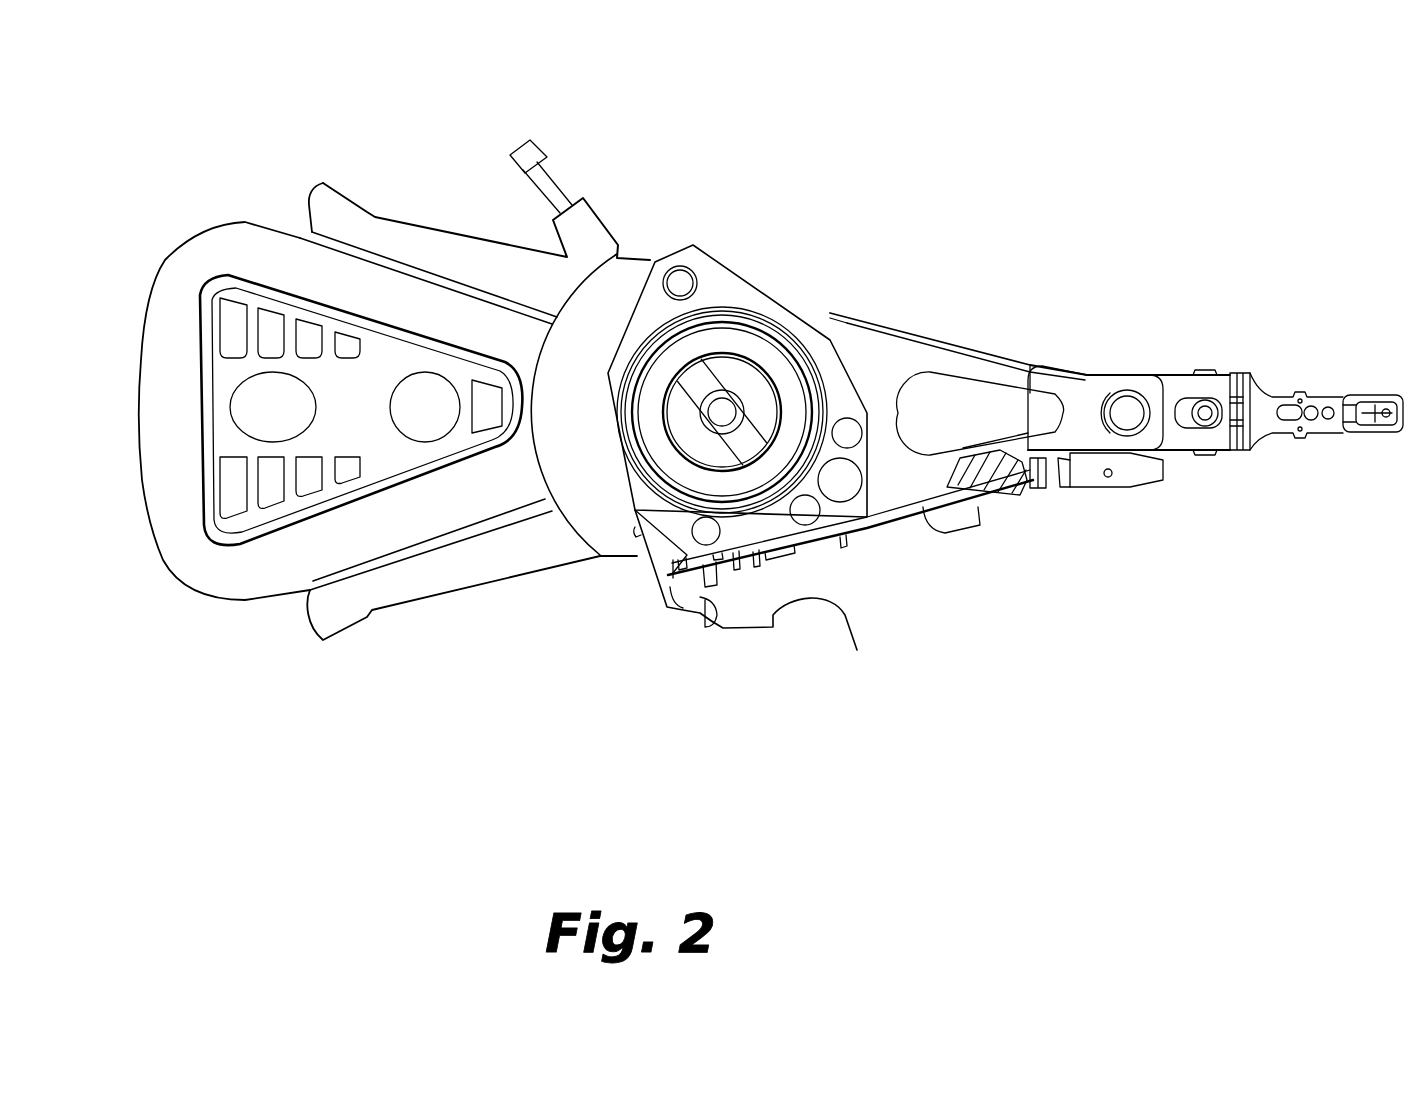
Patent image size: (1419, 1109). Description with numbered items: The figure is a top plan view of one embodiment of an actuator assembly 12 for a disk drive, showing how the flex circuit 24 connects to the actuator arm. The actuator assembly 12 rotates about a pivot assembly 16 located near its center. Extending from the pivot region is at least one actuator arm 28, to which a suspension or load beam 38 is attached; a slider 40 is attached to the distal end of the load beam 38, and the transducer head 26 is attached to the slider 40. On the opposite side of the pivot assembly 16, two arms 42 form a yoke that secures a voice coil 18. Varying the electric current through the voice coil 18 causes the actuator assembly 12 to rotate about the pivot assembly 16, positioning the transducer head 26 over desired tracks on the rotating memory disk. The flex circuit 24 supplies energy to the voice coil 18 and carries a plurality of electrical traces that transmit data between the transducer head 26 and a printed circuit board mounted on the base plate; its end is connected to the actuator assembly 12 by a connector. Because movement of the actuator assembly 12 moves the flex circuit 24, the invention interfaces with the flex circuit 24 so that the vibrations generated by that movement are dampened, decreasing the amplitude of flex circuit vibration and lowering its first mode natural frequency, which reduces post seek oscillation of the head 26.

The actuator assembly 12 is at (868, 253).
The pivot assembly 16 is at (722, 412).
The voice coil 18 is at (203, 255).
The flex circuit 24 is at (777, 617).
The transducer head 26 is at (1383, 432).
The actuator arm 28 is at (898, 360).
The load beam 38 is at (1247, 373).
The slider 40 is at (1358, 395).
The arms 42 is at (373, 228).